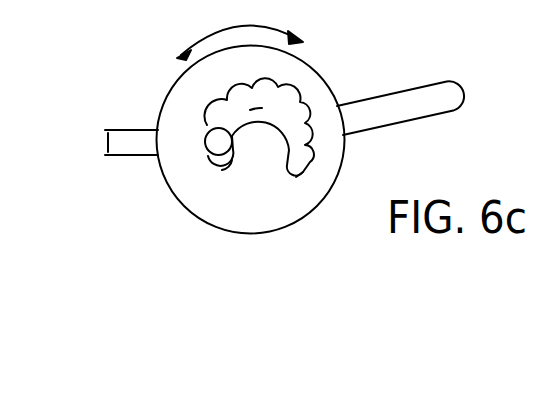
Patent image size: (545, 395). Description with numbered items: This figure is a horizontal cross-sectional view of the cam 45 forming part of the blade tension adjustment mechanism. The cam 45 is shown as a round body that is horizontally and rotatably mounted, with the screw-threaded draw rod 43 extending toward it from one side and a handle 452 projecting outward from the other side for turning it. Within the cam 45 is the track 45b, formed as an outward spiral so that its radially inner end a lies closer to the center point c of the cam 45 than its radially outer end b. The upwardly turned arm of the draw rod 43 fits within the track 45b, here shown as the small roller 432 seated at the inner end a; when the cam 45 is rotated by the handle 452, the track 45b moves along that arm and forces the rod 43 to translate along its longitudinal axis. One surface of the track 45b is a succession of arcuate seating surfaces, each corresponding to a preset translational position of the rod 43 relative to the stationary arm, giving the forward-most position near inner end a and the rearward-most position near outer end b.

The draw rod 43 is at (134, 153).
The cam 45 is at (158, 197).
The track 45b is at (293, 97).
The roller / follower 432 is at (212, 138).
The lever handle 452 is at (380, 120).
The radially inner end a is at (215, 163).
The radially outer end b is at (300, 170).
The center point c is at (243, 152).